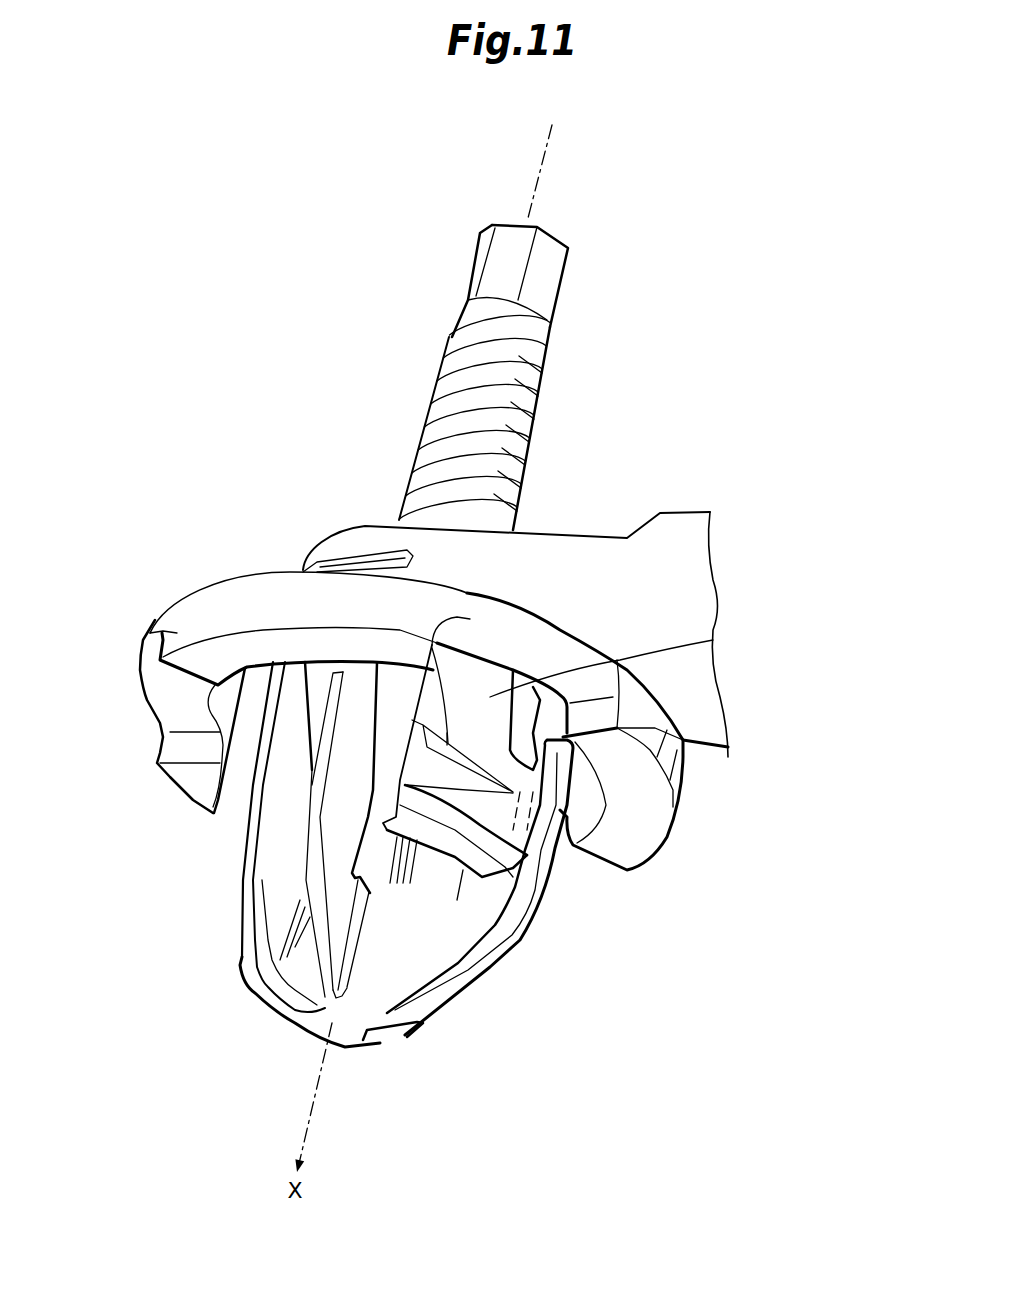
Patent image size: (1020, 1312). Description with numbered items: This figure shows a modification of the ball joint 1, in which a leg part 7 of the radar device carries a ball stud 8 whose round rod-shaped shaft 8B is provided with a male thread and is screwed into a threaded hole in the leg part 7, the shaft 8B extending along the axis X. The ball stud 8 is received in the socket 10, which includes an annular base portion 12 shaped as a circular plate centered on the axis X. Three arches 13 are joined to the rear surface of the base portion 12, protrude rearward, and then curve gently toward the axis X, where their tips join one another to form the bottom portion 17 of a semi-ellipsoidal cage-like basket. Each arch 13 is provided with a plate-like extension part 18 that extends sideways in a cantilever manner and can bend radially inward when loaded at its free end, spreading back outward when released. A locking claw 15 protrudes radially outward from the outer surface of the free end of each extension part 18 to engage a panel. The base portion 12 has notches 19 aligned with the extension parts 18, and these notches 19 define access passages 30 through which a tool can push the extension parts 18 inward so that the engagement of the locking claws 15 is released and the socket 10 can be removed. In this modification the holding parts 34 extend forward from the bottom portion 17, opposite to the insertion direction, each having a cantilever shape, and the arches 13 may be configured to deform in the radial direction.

The ball joint 1 is at (700, 385).
The leg part 7 is at (580, 562).
The ball stud 8 is at (550, 278).
The shaft 8B is at (468, 320).
The socket 10 is at (177, 633).
The base portion 12 is at (223, 597).
The arch 13 is at (257, 870).
The locking claw 15 is at (430, 643).
The bottom portion 17 is at (345, 1033).
The extension part 18 is at (455, 600).
The notch 19 is at (167, 697).
The access passage 30 is at (470, 640).
The holding part 34 is at (313, 773).